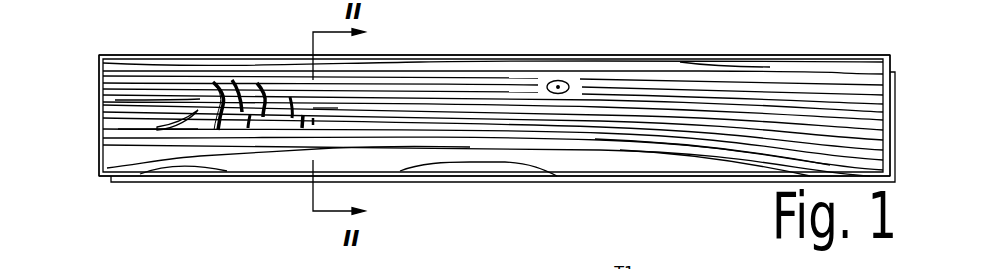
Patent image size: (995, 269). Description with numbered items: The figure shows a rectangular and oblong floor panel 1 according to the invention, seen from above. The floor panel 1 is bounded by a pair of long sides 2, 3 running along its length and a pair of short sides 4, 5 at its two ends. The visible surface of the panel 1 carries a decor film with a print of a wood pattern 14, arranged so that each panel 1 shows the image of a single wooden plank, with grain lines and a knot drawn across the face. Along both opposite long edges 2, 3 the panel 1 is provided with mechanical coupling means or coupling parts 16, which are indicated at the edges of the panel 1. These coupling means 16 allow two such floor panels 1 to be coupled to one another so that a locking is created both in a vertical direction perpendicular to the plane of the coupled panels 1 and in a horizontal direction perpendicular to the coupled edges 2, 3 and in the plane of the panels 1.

The floor panel 1 is at (200, 194).
The long side 2 is at (462, 53).
The long side 3 is at (451, 186).
The short side 4 is at (88, 168).
The short side 5 is at (904, 180).
The wood pattern 14 is at (618, 71).
The mechanical coupling means 16 is at (99, 77).